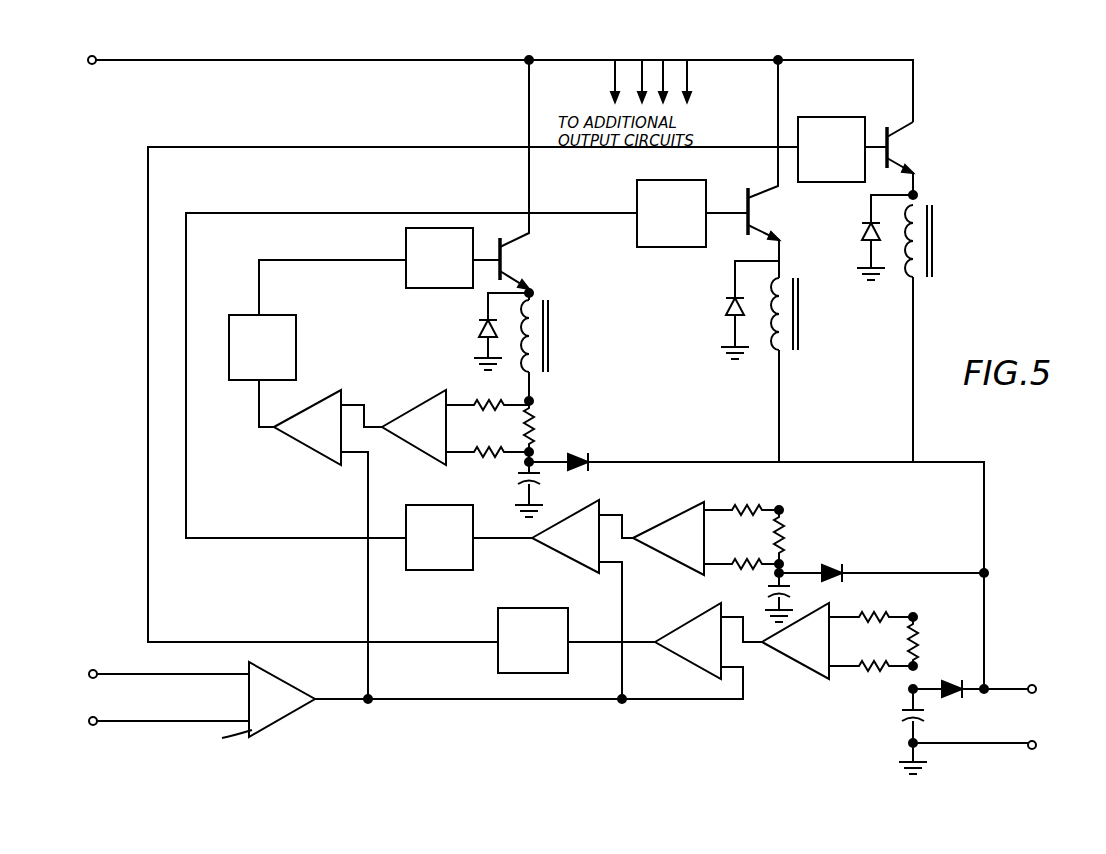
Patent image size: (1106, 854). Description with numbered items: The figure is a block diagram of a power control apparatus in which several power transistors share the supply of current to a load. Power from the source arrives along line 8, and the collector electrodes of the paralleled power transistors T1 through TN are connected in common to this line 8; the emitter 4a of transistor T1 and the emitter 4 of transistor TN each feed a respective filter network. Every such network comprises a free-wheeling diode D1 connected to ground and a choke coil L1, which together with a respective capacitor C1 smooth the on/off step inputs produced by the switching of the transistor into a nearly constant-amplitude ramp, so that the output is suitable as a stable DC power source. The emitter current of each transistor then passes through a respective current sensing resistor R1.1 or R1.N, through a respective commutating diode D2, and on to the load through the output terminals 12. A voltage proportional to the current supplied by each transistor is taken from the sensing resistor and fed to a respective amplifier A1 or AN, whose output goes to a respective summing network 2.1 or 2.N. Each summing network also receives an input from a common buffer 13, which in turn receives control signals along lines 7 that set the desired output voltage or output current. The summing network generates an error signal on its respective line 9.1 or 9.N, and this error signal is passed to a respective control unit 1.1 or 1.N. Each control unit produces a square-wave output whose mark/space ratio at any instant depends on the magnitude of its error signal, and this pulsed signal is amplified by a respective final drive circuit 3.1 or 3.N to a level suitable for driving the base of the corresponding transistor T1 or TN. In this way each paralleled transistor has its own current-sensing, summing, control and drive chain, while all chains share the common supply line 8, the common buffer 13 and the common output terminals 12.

The input line 8 is at (190, 60).
The final drive circuit 3.1 is at (412, 290).
The final drive circuit 3.N is at (660, 249).
The power transistor T1 is at (537, 180).
The power transistor TN is at (786, 169).
The output transistor 4a is at (518, 276).
The power transistor 4 is at (774, 234).
The free-wheeling diode D1 is at (483, 326).
The choke coil L1 is at (550, 318).
The control unit 1.1 is at (297, 348).
The control unit 1.N is at (445, 576).
The error signal line 9.1 is at (231, 412).
The error signal line 9.N is at (501, 549).
The summing network 2.1 is at (287, 539).
The summing network 2.N is at (580, 582).
The amplifier A1 is at (414, 427).
The amplifier AN is at (668, 538).
The current sensing resistor R1.1 is at (490, 427).
The current sensing resistor R1.N is at (744, 537).
The capacitor C1 is at (510, 479).
The commutating diode D2 is at (589, 448).
The control signal lines 7 is at (135, 671).
The common buffer 13 is at (283, 720).
The output terminals 12 is at (1035, 686).